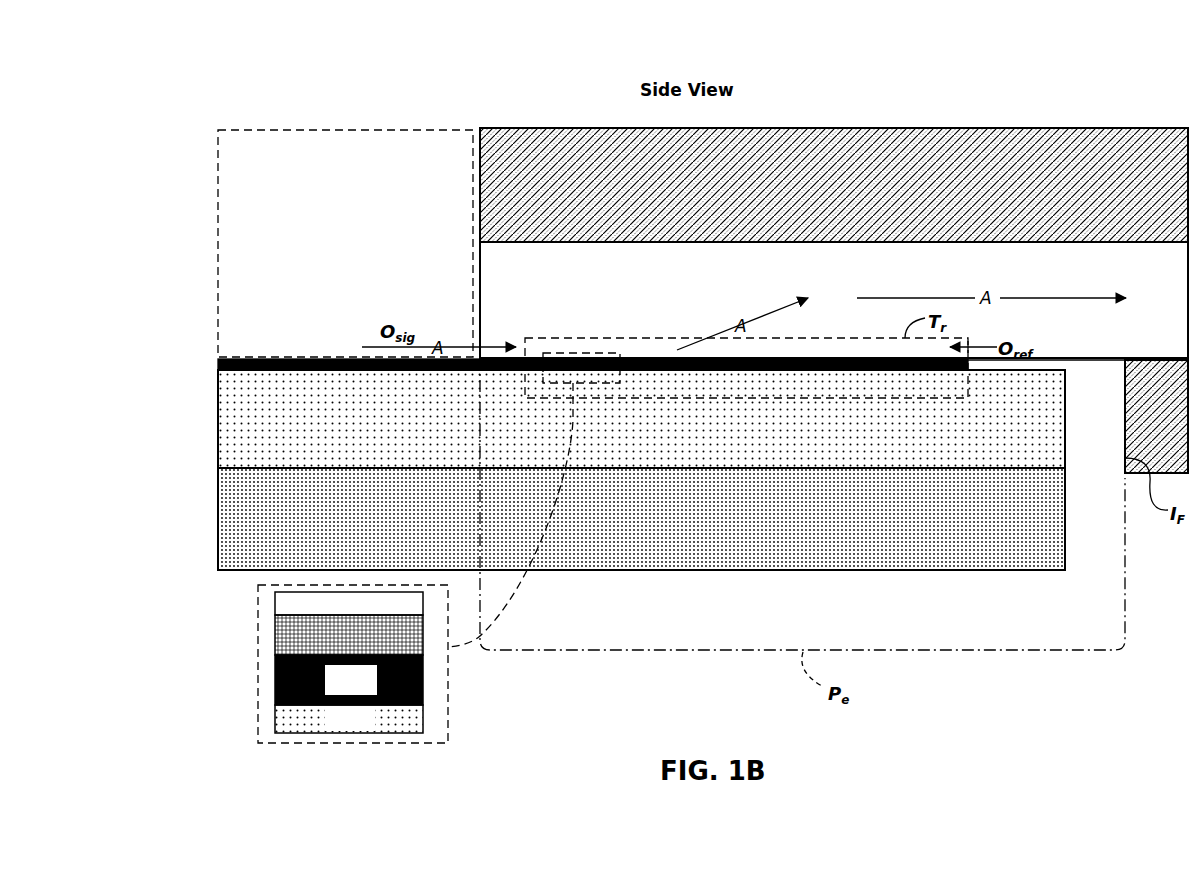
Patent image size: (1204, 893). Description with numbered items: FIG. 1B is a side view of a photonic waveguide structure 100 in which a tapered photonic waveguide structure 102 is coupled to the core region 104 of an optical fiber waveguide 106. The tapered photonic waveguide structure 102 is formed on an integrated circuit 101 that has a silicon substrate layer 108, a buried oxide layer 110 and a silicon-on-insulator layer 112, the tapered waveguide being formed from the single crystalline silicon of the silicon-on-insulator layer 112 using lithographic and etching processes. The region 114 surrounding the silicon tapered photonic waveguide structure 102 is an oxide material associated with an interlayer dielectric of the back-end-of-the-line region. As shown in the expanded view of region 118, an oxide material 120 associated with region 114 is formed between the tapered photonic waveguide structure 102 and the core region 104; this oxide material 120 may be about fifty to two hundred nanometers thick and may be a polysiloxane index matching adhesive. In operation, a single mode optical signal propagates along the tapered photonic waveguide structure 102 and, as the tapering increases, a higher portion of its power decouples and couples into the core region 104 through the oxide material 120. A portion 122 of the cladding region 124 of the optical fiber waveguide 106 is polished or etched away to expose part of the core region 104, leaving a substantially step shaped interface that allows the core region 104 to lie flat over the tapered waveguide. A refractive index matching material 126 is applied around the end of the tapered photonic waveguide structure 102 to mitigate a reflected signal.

The photonic waveguide structure 100 is at (198, 84).
The integrated circuit 101 is at (160, 318).
The tapered photonic waveguide structure 102 is at (260, 359).
The core region 104 is at (834, 300).
The optical fiber waveguide 106 is at (530, 125).
The silicon substrate layer 108 is at (209, 529).
The buried oxide (BOX) layer 110 is at (209, 433).
The silicon-on-insulator (SOI) layer 112 is at (206, 365).
The region surrounding the tapered photonic waveguide structure 114 is at (293, 129).
The expanded view region 118 is at (606, 387).
The oxide material 120 is at (349, 635).
The portion of the cladding region 122 is at (1096, 472).
The cladding region 124 is at (834, 300).
The refractive index matching material 126 is at (1118, 362).